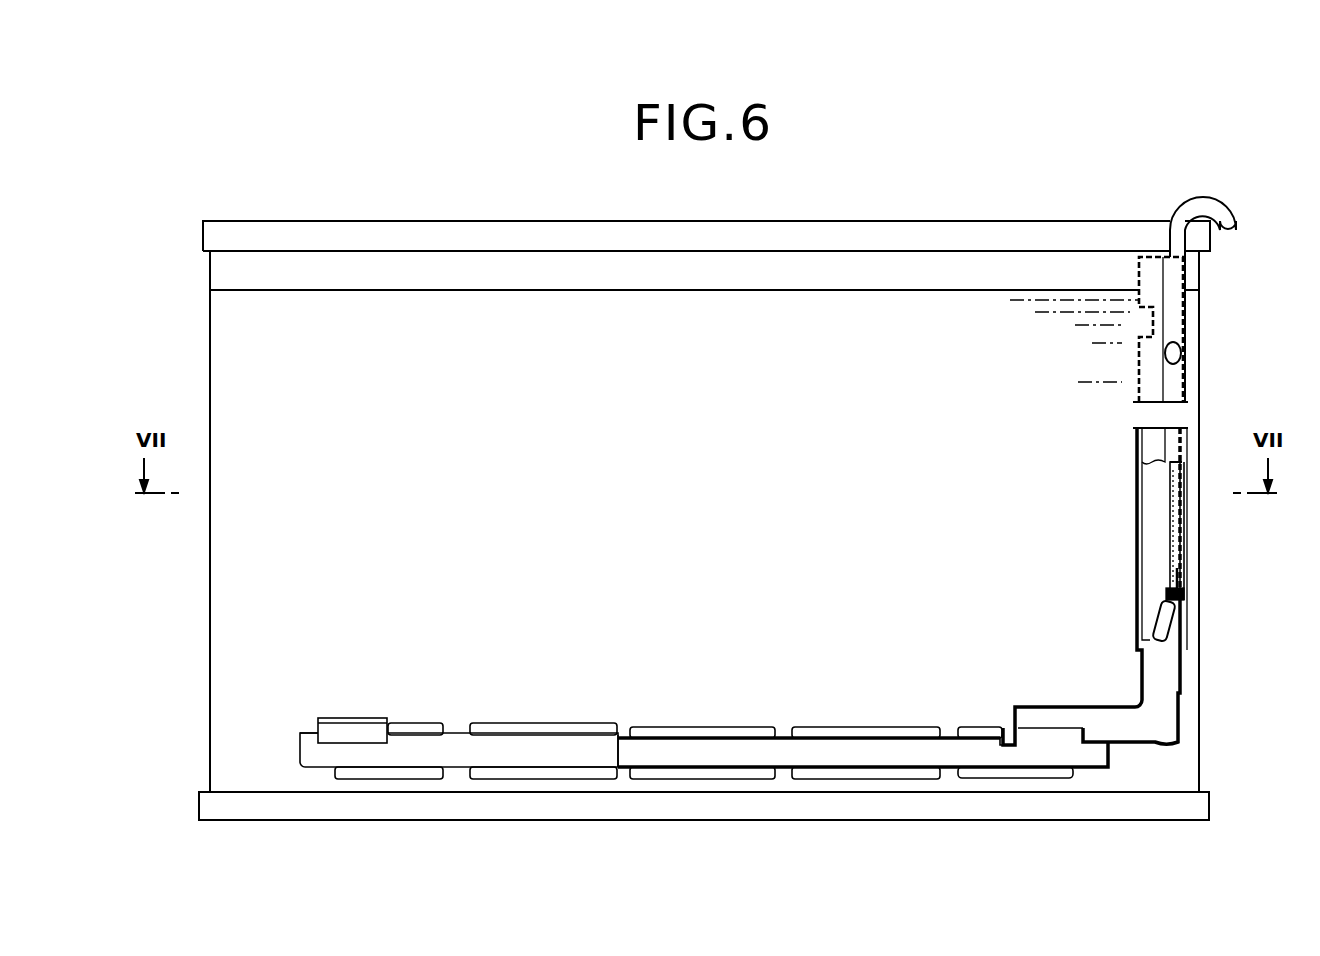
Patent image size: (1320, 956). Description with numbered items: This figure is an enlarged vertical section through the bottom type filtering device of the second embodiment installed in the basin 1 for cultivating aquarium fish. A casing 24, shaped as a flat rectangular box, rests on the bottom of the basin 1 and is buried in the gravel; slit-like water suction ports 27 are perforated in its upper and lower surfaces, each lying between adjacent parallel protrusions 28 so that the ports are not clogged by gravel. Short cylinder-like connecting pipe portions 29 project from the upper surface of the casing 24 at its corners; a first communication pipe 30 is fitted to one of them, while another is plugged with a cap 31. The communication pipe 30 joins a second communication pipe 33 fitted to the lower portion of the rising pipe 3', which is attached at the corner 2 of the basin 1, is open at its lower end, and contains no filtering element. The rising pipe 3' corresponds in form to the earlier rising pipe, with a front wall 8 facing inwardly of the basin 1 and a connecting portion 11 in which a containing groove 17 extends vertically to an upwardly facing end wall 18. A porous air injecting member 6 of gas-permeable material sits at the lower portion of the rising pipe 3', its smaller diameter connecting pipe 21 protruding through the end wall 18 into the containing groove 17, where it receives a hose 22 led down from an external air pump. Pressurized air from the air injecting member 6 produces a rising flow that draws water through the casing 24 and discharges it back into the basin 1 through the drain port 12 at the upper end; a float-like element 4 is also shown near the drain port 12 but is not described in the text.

The basin 1 is at (210, 631).
The corner 2 is at (1203, 308).
The rising pipe 3' is at (1103, 495).
The float valve 4 is at (1173, 355).
The porous air injecting member 6 is at (1168, 627).
The front wall 8 is at (1137, 527).
The connecting portion 11 is at (1184, 546).
The drain port 12 is at (1139, 281).
The containing groove 17 is at (1178, 512).
The end wall 18 is at (1180, 583).
The connecting pipe 21 is at (1178, 600).
The hose 22 is at (1185, 477).
The casing 24 is at (583, 748).
The water suction ports 27 is at (700, 735).
The protrusions 28 is at (800, 727).
The connecting pipe portions 29 is at (323, 733).
The communication pipe 30 is at (1135, 742).
The cap 31 is at (334, 718).
The second communication pipe 33 is at (1180, 672).